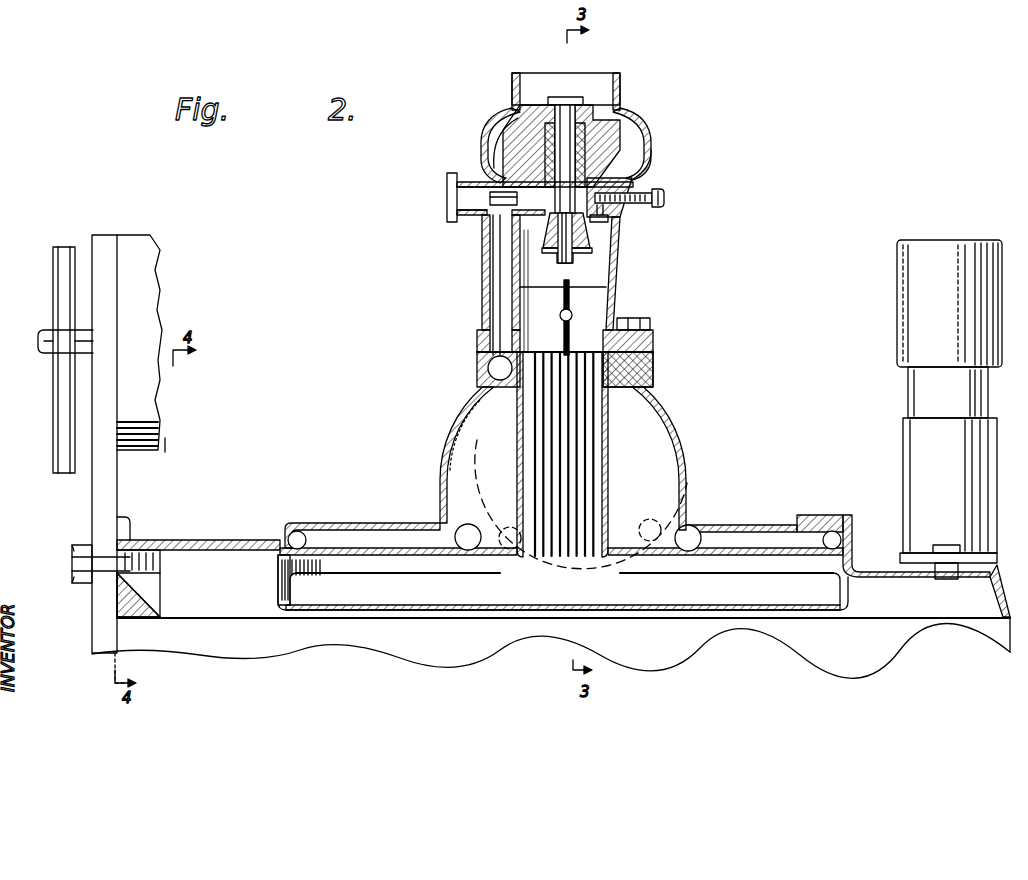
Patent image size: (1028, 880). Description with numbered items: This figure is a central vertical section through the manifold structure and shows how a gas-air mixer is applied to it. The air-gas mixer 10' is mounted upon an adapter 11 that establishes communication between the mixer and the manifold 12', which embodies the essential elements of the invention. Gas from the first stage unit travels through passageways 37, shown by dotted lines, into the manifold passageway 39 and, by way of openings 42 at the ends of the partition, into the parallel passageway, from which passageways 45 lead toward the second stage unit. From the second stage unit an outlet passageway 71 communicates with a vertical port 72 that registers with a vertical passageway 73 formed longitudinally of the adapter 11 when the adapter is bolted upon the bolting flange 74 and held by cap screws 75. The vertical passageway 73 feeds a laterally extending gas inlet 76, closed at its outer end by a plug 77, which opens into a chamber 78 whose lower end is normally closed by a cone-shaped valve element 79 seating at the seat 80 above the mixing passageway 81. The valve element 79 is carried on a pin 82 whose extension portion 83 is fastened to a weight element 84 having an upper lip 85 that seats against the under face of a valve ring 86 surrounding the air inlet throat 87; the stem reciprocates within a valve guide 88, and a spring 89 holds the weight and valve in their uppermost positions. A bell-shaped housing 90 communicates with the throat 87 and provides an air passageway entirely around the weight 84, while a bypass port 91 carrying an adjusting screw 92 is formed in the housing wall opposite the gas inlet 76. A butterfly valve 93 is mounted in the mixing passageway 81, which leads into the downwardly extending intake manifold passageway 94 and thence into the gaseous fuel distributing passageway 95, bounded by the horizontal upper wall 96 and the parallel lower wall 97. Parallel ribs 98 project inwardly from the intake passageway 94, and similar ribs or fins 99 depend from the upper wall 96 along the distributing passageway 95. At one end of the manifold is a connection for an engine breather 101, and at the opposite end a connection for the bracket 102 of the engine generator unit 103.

The air-gas mixer 10' is at (555, 160).
The adapter 11 is at (618, 262).
The manifold 12' is at (584, 458).
The passageways 37 is at (505, 530).
The manifold passageway 39 is at (342, 530).
The openings 42 is at (295, 535).
The passageways 45 is at (466, 536).
The outlet passageway 71 is at (498, 370).
The vertical port 72 is at (480, 362).
The vertical passageway 73 is at (496, 238).
The bolting flange 74 is at (645, 376).
The cap screws 75 is at (632, 320).
The gas inlet 76 is at (512, 196).
The plug 77 is at (466, 196).
The chamber 78 is at (630, 192).
The cone-shaped valve element 79 is at (590, 240).
The seat 80 is at (608, 220).
The mixing passageway 81 is at (596, 293).
The pin 82 is at (580, 120).
The extension portion 83 is at (568, 96).
The weight element 84 is at (650, 141).
The upper lip 85 is at (540, 120).
The valve ring 86 is at (630, 125).
The air inlet throat 87 is at (588, 78).
The valve guide 88 is at (632, 172).
The spring 89 is at (512, 128).
The bell-shaped housing 90 is at (483, 145).
The bypass port 91 is at (663, 205).
The adjusting screw 92 is at (660, 196).
The butterfly valve 93 is at (570, 330).
The intake manifold passageway 94 is at (607, 462).
The gaseous fuel distributing passageway 95 is at (605, 580).
The upper wall 96 is at (460, 556).
The lower wall 97 is at (548, 610).
The ribs 98 is at (590, 500).
The ribs or fins 99 is at (305, 564).
The engine breather 101 is at (922, 250).
The bracket 102 is at (112, 510).
The engine generator unit 103 is at (156, 432).